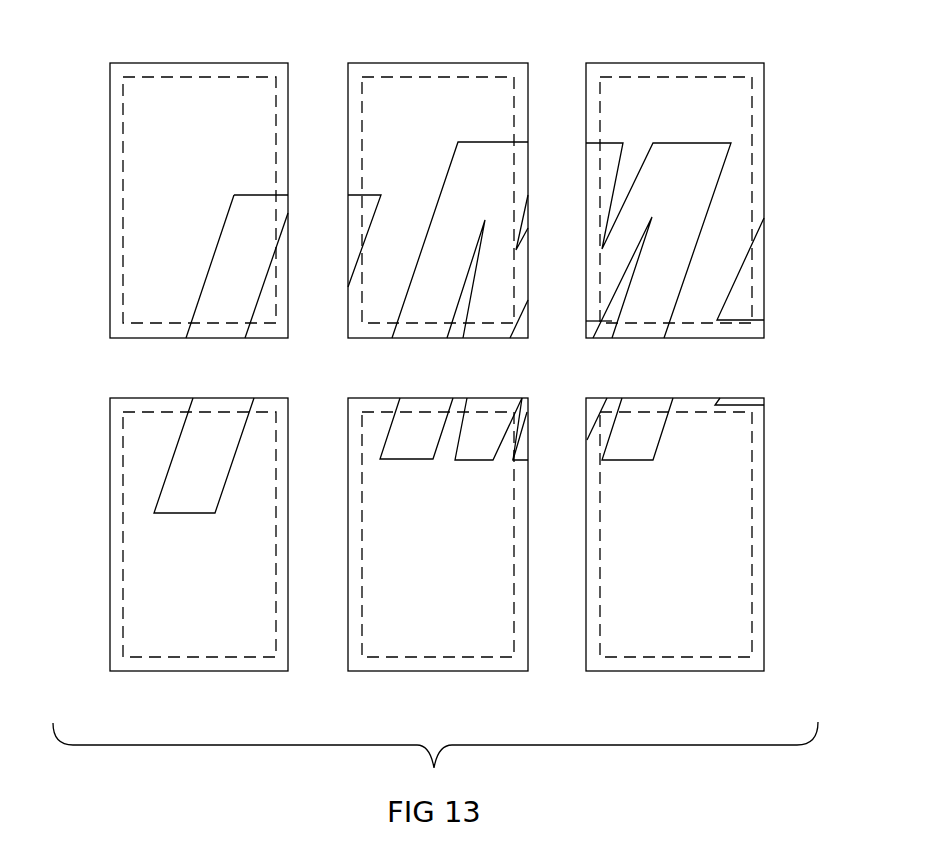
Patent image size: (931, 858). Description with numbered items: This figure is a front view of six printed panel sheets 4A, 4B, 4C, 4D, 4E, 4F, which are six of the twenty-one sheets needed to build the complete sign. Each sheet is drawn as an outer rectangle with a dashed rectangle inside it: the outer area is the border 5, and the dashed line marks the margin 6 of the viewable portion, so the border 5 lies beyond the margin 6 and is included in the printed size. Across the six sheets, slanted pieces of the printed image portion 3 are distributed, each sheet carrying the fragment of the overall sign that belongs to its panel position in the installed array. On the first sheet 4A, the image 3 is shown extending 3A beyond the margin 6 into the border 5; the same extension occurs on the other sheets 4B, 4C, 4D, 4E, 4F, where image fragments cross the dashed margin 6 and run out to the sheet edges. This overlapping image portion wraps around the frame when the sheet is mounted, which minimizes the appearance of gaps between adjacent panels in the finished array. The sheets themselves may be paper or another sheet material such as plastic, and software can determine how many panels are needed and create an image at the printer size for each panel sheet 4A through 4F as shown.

The printed panel sheet 4A is at (202, 174).
The printed panel sheet 4B is at (369, 63).
The printed panel sheet 4C is at (607, 63).
The printed panel sheet 4D is at (155, 672).
The printed panel sheet 4E is at (393, 672).
The printed panel sheet 4F is at (632, 672).
The border 5 is at (118, 115).
The margin 6 is at (123, 142).
The printed image portion 3 is at (258, 247).
The extension of image beyond margin 3A is at (282, 195).